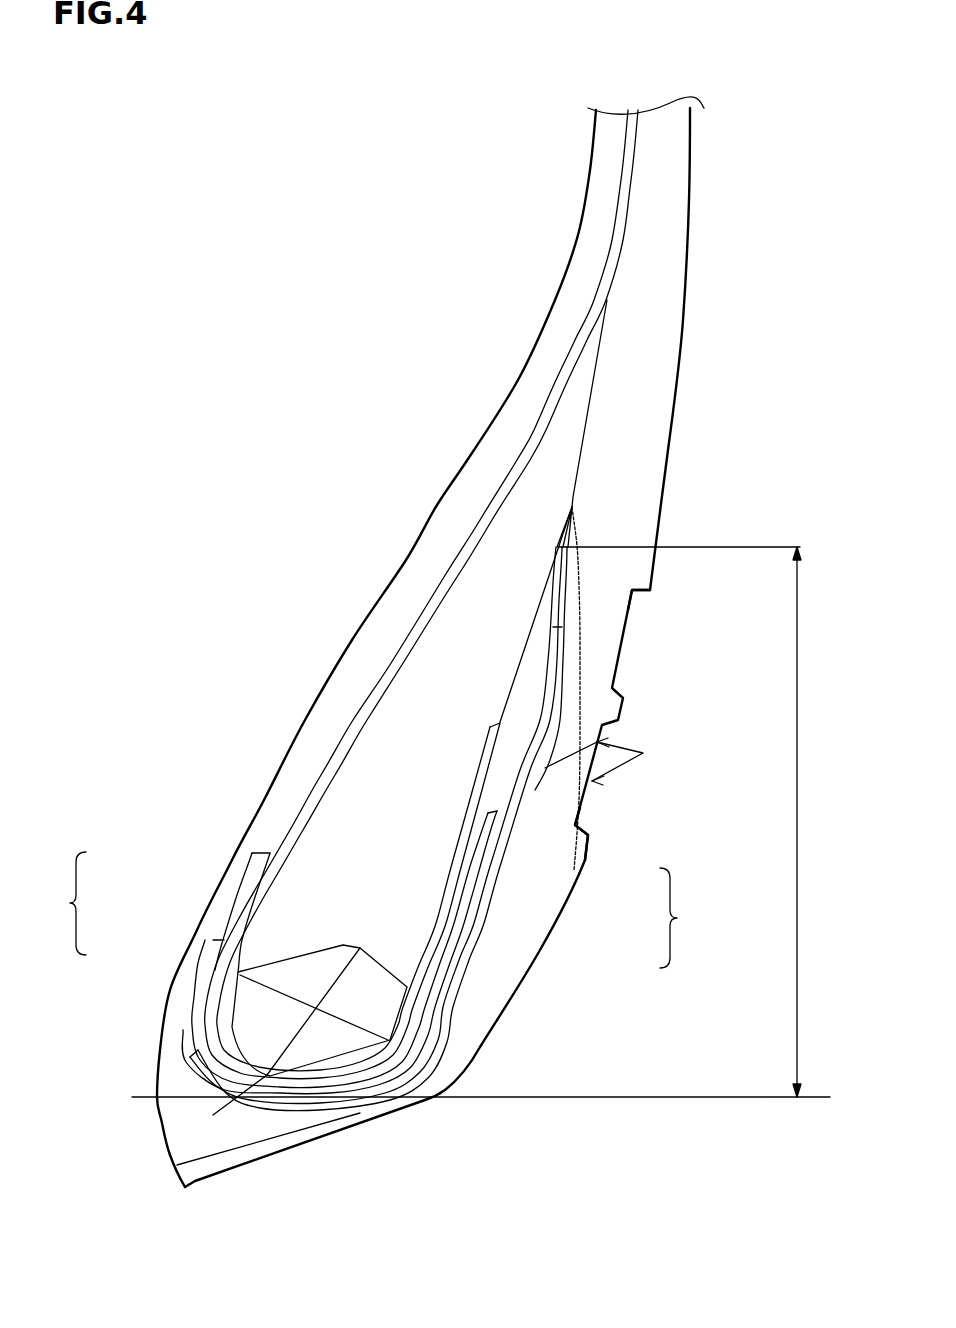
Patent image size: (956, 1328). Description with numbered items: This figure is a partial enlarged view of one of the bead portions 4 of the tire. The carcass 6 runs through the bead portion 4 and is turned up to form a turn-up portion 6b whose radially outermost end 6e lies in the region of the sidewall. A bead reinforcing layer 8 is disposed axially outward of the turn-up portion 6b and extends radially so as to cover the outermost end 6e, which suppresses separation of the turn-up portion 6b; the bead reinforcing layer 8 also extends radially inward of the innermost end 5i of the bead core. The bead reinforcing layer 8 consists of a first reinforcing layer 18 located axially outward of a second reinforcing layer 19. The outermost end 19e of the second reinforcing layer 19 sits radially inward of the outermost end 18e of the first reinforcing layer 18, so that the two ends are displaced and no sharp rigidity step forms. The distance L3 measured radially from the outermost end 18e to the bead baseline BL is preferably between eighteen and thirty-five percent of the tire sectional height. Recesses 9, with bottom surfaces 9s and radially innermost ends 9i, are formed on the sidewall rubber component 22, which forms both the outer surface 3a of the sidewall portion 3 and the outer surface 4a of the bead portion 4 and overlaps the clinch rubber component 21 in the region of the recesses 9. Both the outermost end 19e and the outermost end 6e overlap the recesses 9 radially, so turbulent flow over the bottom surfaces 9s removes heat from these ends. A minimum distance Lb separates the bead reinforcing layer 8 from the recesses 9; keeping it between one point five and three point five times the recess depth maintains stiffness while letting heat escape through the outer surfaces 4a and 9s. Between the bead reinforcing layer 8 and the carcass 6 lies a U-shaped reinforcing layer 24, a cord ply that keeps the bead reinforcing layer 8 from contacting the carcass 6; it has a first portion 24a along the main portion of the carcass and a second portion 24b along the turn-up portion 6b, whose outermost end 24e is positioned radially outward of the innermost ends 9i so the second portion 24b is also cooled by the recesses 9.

The sidewall portion 3 is at (709, 137).
The outer surface of sidewall portion 3a is at (695, 173).
The sidewall rubber component 22 is at (655, 240).
The outermost end of first reinforcing layer 18e is at (573, 540).
The carcass 6 is at (447, 577).
The outermost end of turn-up portion 6e is at (500, 713).
The turn-up portion 6b is at (487, 752).
The recess 9 is at (652, 633).
The bottom surface of recess 9s is at (632, 604).
The innermost end of recess 9i is at (588, 829).
The outermost end of second reinforcing layer 19e is at (553, 627).
The minimum distance Lb is at (641, 752).
The outermost end of second portion 24e is at (500, 813).
The second portion 24b is at (455, 905).
The first portion 24a is at (226, 940).
The U-shaped reinforcing layer 24 is at (62, 903).
The first reinforcing layer 18 is at (505, 845).
The second reinforcing layer 19 is at (472, 895).
The bead reinforcing layer 8 is at (683, 918).
The innermost end of bead core 5i is at (237, 1101).
The bead portion 4 is at (533, 1005).
The outer surface of bead portion 4a is at (306, 1144).
The clinch rubber component 21 is at (445, 1073).
The bead baseline BL is at (683, 1088).
The distance L3 is at (697, 822).